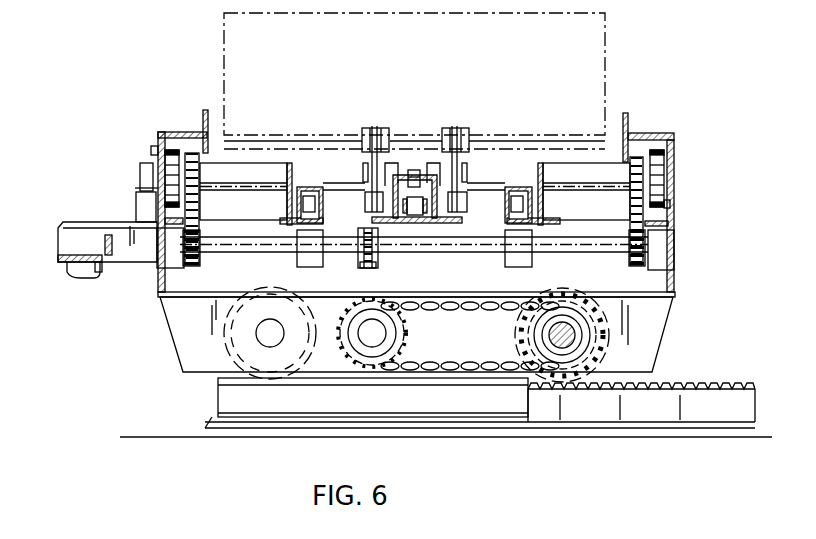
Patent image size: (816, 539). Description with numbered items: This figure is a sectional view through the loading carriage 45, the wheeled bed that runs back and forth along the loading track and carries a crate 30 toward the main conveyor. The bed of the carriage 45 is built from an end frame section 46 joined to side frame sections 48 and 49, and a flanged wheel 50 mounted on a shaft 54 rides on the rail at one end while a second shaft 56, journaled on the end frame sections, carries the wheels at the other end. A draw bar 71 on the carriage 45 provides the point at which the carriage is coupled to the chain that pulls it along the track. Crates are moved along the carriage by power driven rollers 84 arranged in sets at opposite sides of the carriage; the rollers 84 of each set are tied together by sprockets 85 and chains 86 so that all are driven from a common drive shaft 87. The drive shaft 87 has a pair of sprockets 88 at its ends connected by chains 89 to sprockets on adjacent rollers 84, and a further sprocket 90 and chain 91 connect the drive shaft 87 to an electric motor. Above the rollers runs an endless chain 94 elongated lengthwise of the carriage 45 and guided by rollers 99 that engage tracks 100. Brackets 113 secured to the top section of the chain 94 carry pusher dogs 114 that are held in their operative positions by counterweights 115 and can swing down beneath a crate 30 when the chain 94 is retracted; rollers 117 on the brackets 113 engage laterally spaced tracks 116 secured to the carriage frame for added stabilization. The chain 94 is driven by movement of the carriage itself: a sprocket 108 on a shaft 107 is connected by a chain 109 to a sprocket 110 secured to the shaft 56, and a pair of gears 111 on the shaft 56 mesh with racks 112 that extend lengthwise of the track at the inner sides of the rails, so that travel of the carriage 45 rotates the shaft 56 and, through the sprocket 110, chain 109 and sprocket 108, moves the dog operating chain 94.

The crate 30 is at (608, 80).
The loading carriage 45 is at (689, 142).
The end frame section 46 is at (668, 328).
The side frame section 48 is at (160, 132).
The side frame section 49 is at (655, 133).
The flanged wheel 50 is at (373, 397).
The shaft 54 is at (258, 333).
The shaft 56 is at (575, 335).
The draw bar 71 is at (142, 262).
The power driven rollers 84 is at (415, 194).
The sprockets 85 is at (171, 150).
The chains 86 is at (158, 152).
The drive shaft 87 is at (432, 245).
The sprockets 88 is at (196, 266).
The chains 89 is at (200, 204).
The sprocket 90 is at (378, 257).
The chain 91 is at (360, 263).
The endless chain 94 is at (413, 168).
The rollers 99 is at (416, 168).
The tracks 100 is at (437, 208).
The shaft 107 is at (350, 333).
The sprocket 108 is at (397, 341).
The chain 109 is at (492, 304).
The sprocket 110 is at (535, 332).
The gears 111 is at (612, 358).
The racks 112 is at (708, 388).
The brackets 113 is at (428, 160).
The pusher dogs 114 is at (362, 135).
The counterweights 115 is at (365, 200).
The tracks 116 is at (308, 186).
The rollers 117 is at (312, 197).